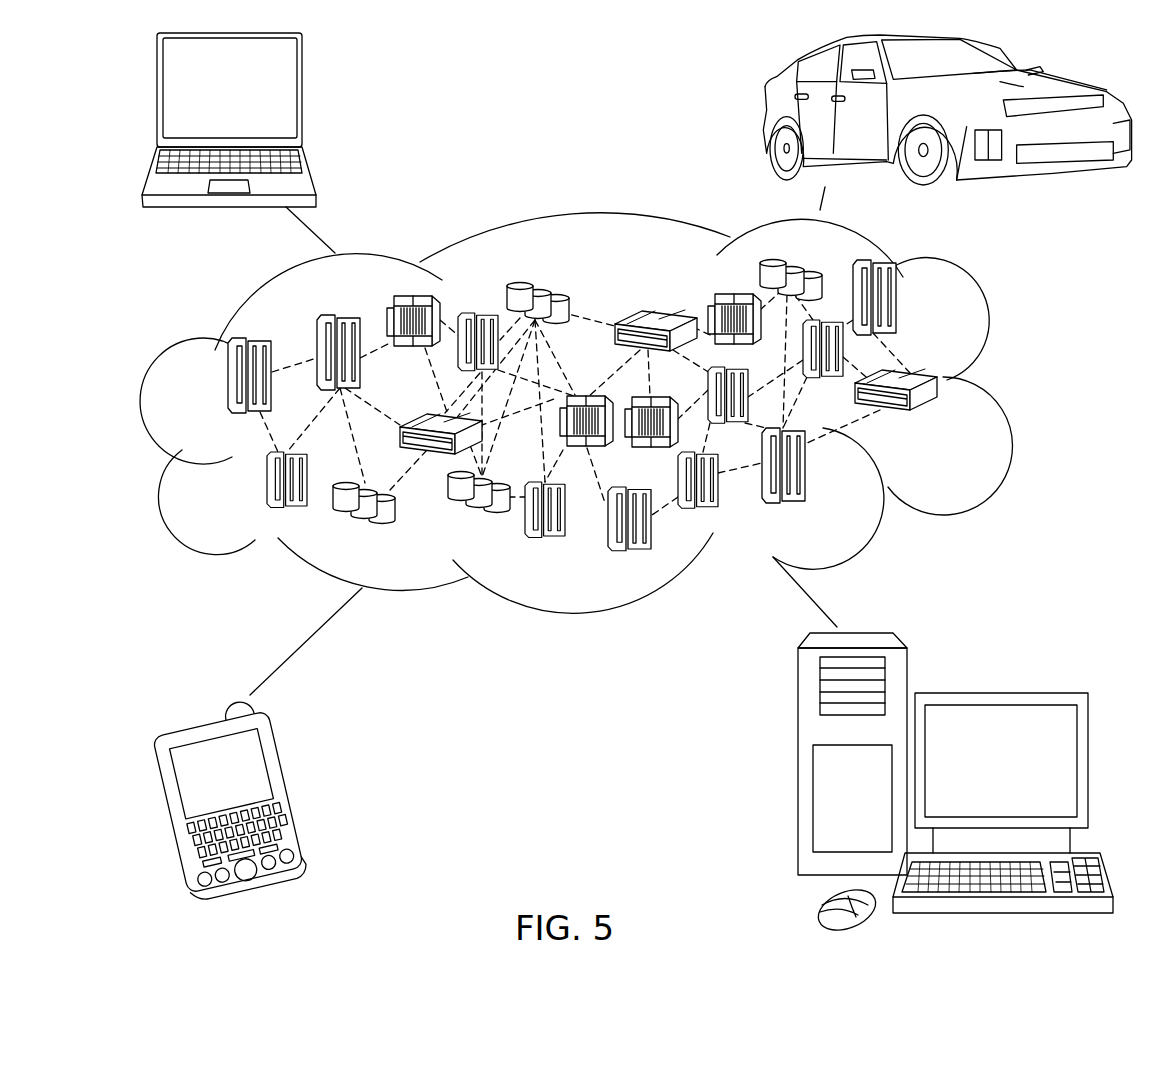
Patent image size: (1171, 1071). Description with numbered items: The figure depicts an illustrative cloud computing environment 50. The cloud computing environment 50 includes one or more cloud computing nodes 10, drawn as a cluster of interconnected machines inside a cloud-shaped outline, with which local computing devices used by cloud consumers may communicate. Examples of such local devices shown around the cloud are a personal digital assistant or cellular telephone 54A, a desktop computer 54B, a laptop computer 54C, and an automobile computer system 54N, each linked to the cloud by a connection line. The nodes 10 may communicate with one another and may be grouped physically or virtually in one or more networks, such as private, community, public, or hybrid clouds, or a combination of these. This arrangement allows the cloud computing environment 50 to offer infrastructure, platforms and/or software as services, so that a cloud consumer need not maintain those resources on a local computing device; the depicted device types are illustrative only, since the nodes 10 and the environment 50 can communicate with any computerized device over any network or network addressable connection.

The cloud computing node 10 is at (938, 419).
The cloud computing environment 50 is at (1000, 383).
The personal digital assistant or cellular telephone 54A is at (290, 790).
The desktop computer 54B is at (998, 692).
The laptop computer 54C is at (302, 97).
The automobile computer system 54N is at (768, 112).